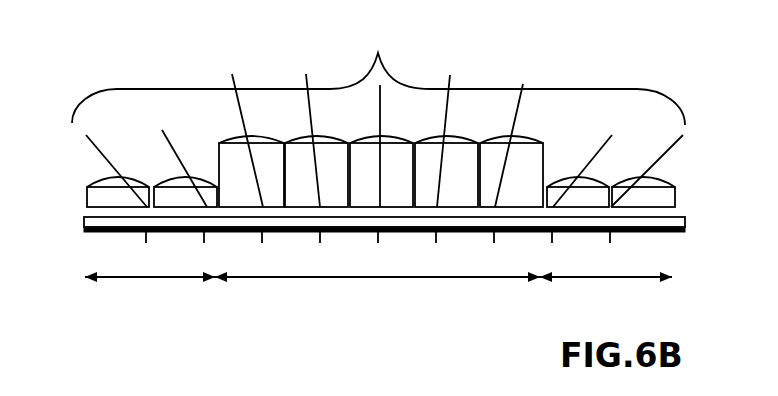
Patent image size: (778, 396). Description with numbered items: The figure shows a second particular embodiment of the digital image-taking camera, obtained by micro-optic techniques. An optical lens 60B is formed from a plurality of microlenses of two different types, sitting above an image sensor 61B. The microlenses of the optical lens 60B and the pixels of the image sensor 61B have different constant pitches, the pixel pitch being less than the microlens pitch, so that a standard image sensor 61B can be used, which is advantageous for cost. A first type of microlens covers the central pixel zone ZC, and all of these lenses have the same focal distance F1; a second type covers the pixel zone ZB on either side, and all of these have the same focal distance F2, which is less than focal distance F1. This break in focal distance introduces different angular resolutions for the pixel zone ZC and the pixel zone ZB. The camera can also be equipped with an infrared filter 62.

The optical lens 60B is at (371, 117).
The focal distance F1 is at (535, 147).
The focal distance F2 is at (93, 192).
The image sensor 61B is at (107, 233).
The infrared filter 62 is at (680, 218).
The pixel zone ZB is at (378, 264).
The pixel zone ZC is at (377, 264).